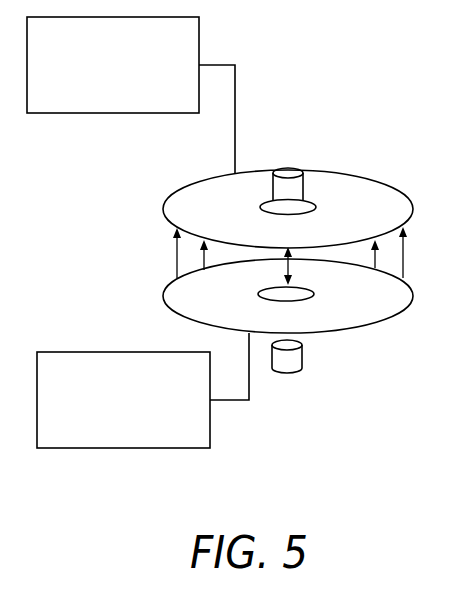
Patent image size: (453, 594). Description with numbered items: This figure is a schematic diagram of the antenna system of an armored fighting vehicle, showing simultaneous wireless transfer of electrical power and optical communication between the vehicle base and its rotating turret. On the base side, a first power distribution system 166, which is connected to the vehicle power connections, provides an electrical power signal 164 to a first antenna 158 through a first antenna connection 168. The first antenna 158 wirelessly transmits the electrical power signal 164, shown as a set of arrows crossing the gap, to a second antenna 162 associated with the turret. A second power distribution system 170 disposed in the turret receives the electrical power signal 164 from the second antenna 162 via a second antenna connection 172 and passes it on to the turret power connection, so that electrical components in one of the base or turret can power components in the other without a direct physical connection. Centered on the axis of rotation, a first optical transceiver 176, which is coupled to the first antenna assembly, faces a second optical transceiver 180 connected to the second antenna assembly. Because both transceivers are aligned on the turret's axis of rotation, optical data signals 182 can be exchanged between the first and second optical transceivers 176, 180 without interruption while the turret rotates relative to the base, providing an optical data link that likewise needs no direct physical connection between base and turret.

The first antenna 158 is at (200, 312).
The second antenna 162 is at (190, 192).
The electrical power signal 164 is at (176, 261).
The first power distribution system 166 is at (139, 411).
The first antenna connection 168 is at (252, 388).
The second power distribution system 170 is at (130, 76).
The second antenna connection 172 is at (237, 98).
The first optical transceiver 176 is at (291, 372).
The second optical transceiver 180 is at (288, 172).
The optical data signals 182 is at (283, 266).